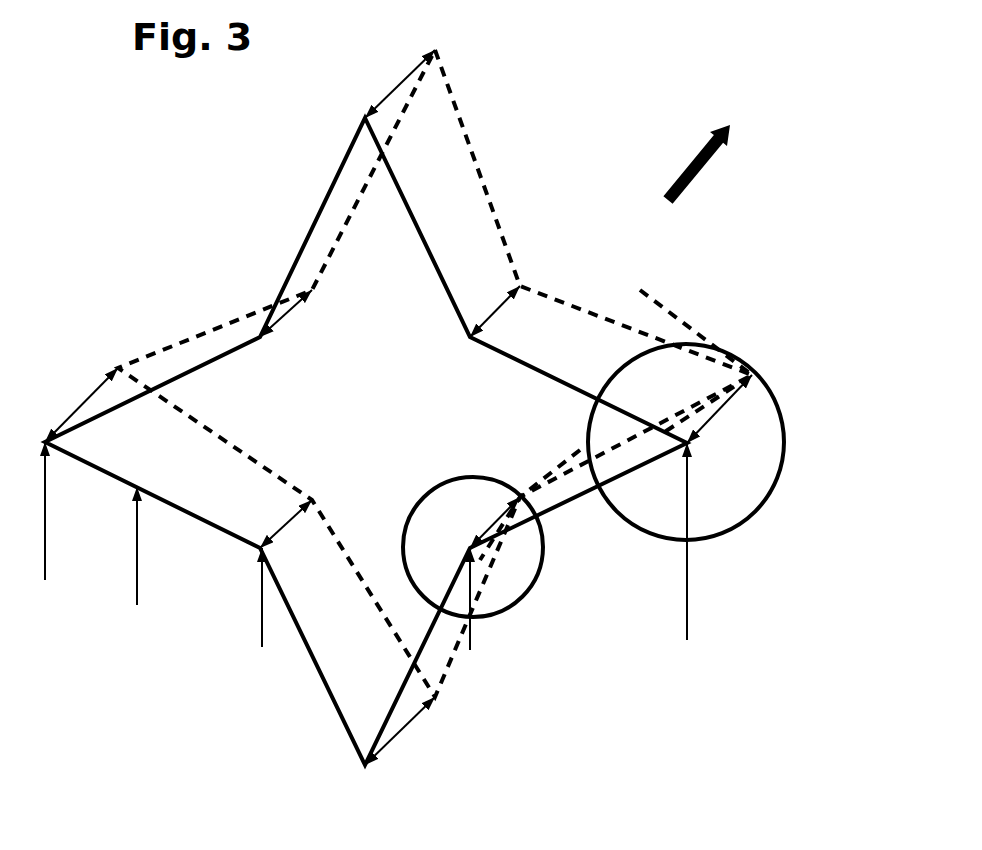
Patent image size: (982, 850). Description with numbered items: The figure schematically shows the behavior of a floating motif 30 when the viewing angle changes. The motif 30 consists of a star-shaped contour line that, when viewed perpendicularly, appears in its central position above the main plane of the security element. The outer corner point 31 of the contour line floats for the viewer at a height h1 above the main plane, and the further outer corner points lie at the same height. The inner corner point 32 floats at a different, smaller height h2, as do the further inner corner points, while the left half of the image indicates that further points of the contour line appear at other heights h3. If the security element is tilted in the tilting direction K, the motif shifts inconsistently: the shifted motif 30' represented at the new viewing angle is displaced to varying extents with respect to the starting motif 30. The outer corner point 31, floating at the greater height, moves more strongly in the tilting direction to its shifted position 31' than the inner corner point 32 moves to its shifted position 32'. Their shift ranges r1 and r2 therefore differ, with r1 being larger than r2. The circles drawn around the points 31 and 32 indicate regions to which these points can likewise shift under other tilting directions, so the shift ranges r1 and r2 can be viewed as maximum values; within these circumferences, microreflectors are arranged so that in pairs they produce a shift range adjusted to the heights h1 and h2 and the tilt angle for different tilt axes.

The floating motif 30 is at (366, 441).
The shifted motif 30' is at (398, 407).
The outer corner point 31 is at (694, 443).
The shifted outer corner point 31' is at (763, 362).
The inner corner point 32 is at (463, 536).
The shifted inner corner point 32' is at (530, 487).
The shift range of outer corner point r1 is at (719, 409).
The shift range of inner corner point r2 is at (495, 521).
The floating height of outer corner points h1 is at (387, 541).
The floating height of inner corner points h2 is at (369, 603).
The further floating height h3 is at (157, 546).
The tilting direction K is at (691, 164).